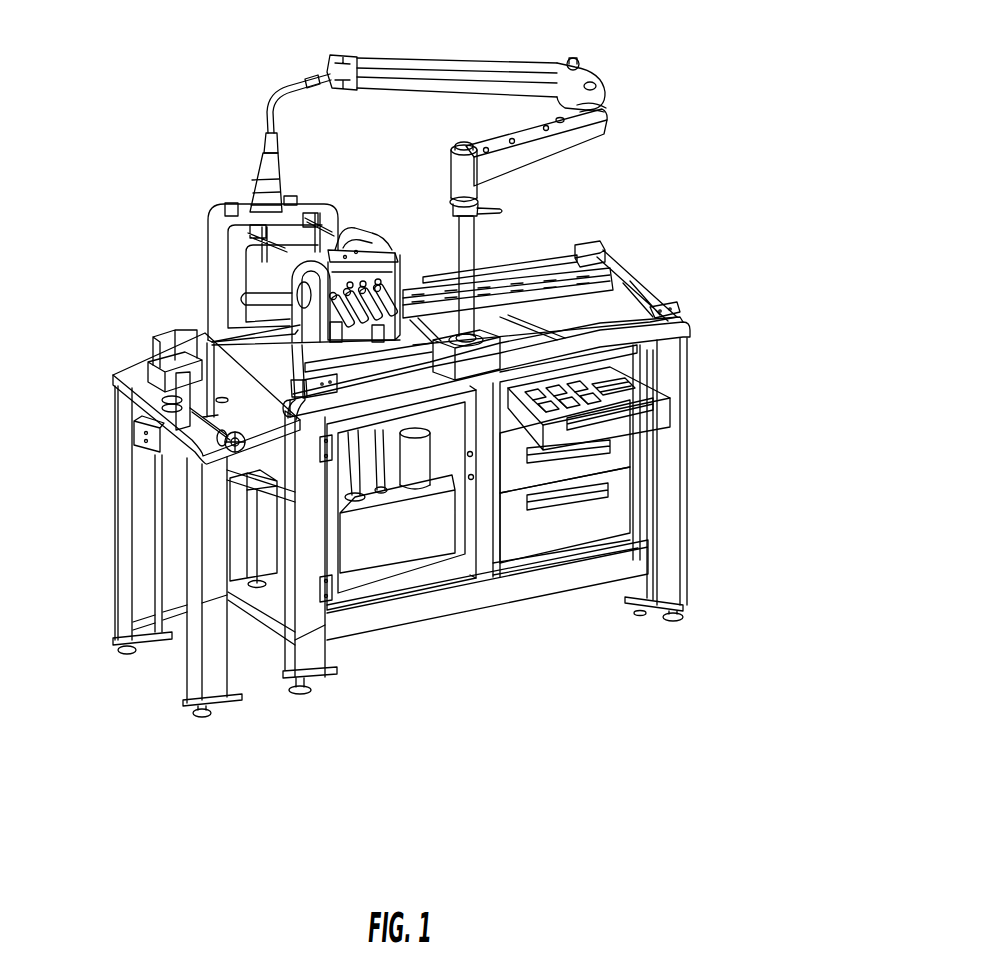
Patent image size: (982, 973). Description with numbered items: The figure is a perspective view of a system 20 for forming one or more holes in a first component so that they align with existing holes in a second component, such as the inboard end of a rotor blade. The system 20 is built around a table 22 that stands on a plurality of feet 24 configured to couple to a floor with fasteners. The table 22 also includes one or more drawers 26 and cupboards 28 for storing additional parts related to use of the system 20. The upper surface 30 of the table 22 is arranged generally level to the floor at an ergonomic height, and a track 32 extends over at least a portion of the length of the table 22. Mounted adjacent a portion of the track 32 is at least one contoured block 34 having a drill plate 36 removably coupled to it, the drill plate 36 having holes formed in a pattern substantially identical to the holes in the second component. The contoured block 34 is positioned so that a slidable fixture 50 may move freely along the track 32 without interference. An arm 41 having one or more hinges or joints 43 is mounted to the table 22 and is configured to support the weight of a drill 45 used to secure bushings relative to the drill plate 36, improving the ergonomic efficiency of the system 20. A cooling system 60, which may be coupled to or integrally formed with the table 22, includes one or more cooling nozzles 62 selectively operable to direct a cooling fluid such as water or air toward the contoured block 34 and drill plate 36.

The system 20 is at (727, 123).
The table 22 is at (717, 323).
The feet 24 is at (337, 680).
The drawers 26 is at (678, 417).
The cupboards 28 is at (465, 575).
The upper surface 30 is at (632, 318).
The track 32 is at (596, 257).
The contoured block 34 is at (400, 267).
The drill plate 36 is at (370, 247).
The arm 41 is at (514, 67).
The hinges or joints 43 is at (602, 88).
The drill 45 is at (262, 160).
The slidable fixture 50 is at (208, 267).
The cooling system 60 is at (232, 545).
The cooling nozzles 62 is at (243, 299).